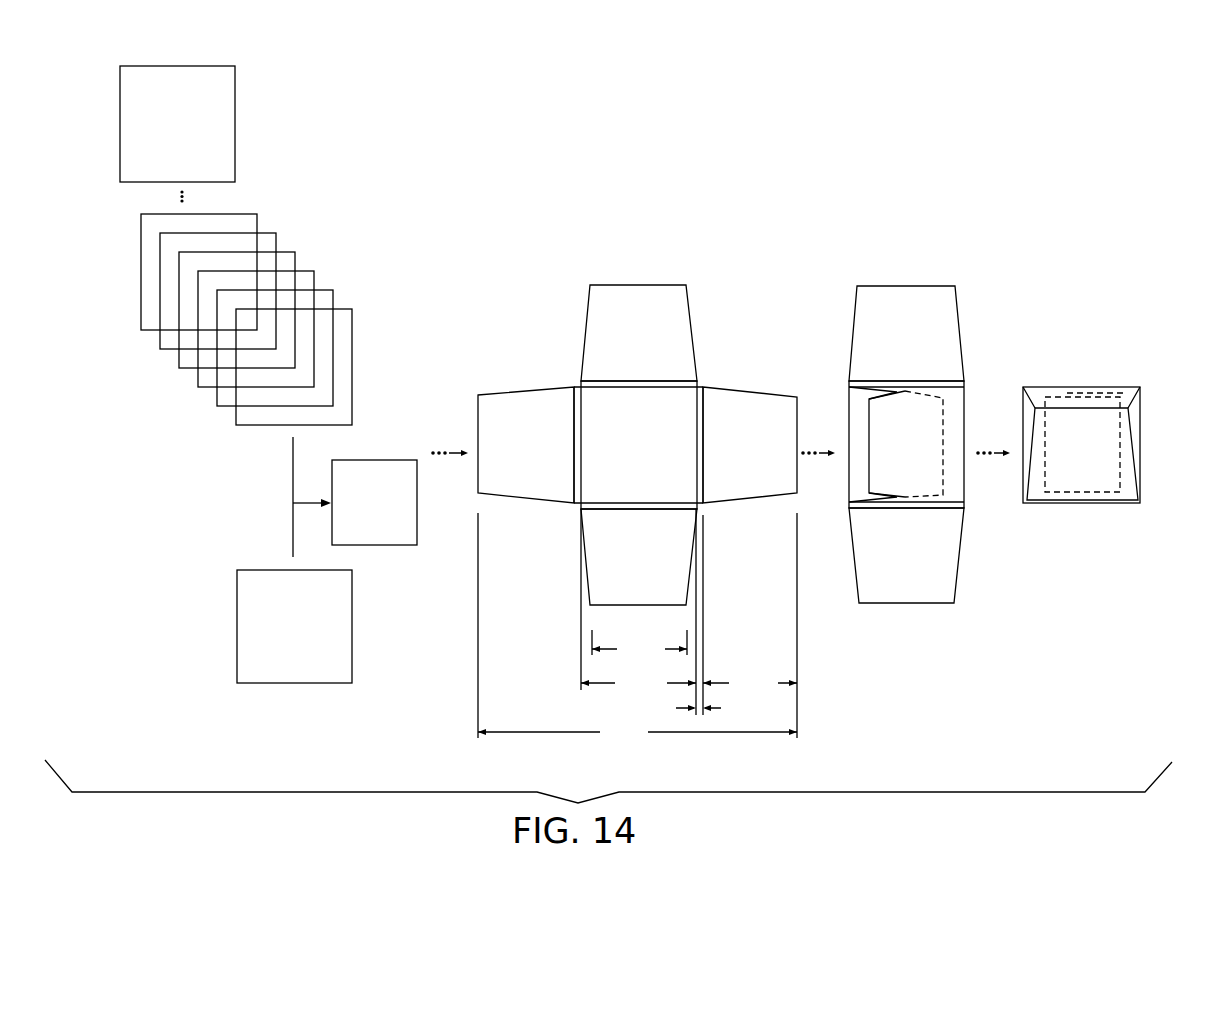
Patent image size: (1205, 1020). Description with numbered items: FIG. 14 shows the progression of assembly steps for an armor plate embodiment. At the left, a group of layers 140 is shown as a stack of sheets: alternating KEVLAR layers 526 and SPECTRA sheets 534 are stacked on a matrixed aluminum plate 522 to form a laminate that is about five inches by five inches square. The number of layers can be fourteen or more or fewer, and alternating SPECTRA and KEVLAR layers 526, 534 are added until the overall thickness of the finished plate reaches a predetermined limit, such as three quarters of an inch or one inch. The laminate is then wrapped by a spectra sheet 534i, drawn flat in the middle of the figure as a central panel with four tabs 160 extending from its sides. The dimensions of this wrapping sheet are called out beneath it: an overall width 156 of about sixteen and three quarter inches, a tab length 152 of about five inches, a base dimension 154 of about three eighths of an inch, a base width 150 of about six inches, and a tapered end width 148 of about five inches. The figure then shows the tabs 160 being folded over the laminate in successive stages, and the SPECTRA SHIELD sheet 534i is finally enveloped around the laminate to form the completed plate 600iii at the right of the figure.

The plurality of images 140 is at (92, 80).
The KEVLAR layer 526 is at (235, 147).
The SPECTRA sheet 534 is at (257, 222).
The matrixed aluminum plate 522 is at (255, 647).
The spectra sheet 534i is at (637, 504).
The tab 160 is at (672, 330).
The tapered end width 148 is at (639, 646).
The base width 150 is at (638, 683).
The tab length 152 is at (750, 683).
The base dimension 154 is at (720, 708).
The width 156 is at (637, 732).
The plate 600iii is at (1063, 512).